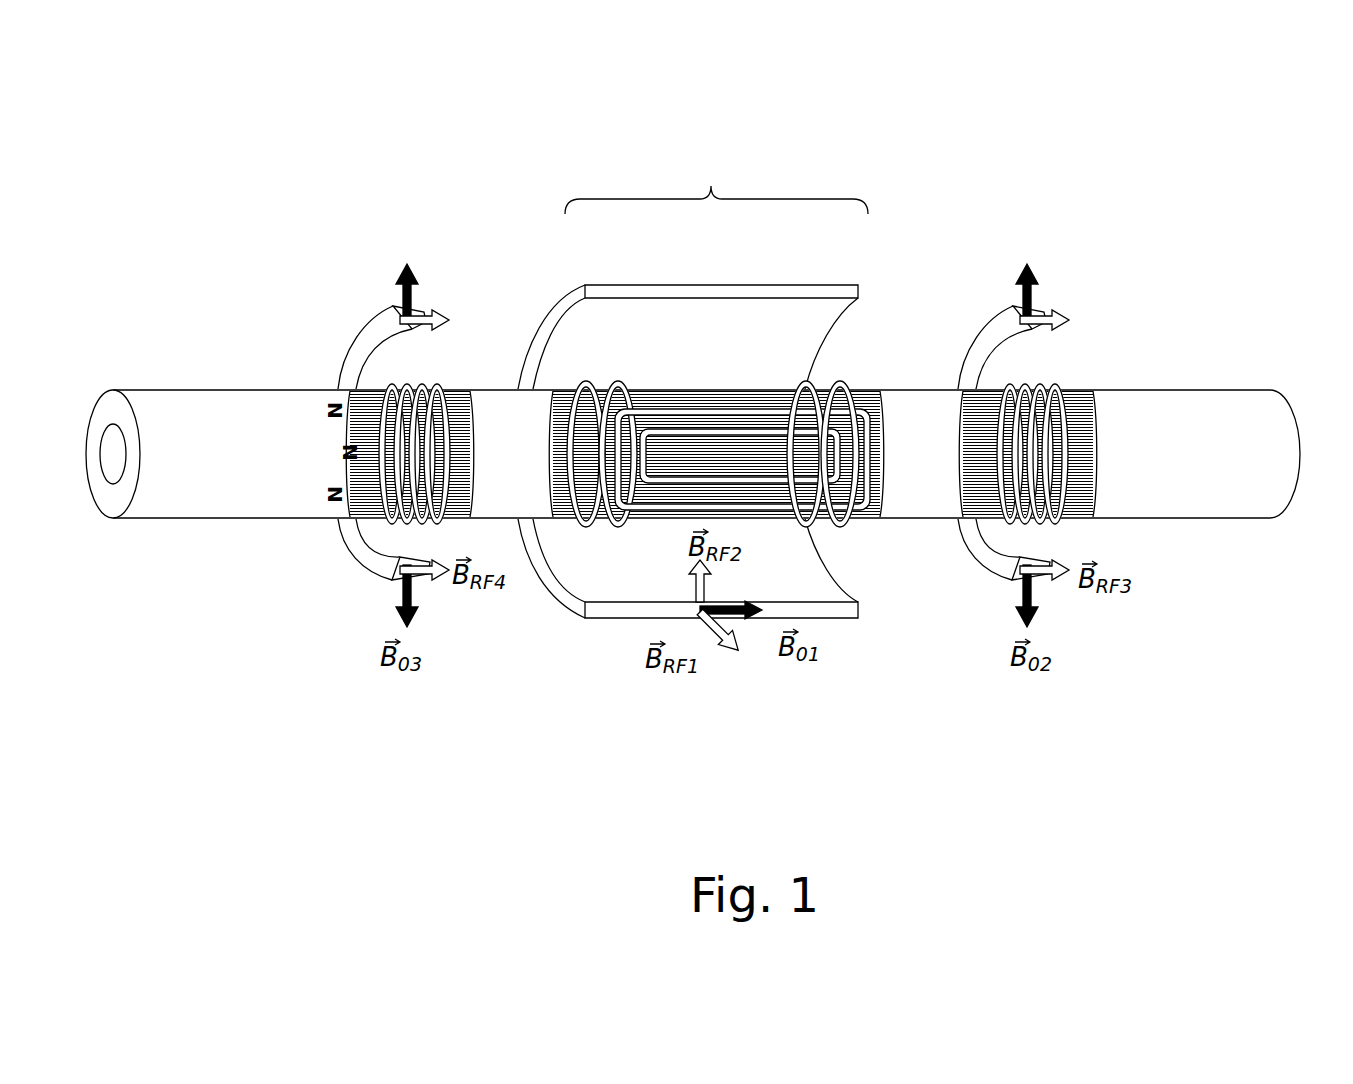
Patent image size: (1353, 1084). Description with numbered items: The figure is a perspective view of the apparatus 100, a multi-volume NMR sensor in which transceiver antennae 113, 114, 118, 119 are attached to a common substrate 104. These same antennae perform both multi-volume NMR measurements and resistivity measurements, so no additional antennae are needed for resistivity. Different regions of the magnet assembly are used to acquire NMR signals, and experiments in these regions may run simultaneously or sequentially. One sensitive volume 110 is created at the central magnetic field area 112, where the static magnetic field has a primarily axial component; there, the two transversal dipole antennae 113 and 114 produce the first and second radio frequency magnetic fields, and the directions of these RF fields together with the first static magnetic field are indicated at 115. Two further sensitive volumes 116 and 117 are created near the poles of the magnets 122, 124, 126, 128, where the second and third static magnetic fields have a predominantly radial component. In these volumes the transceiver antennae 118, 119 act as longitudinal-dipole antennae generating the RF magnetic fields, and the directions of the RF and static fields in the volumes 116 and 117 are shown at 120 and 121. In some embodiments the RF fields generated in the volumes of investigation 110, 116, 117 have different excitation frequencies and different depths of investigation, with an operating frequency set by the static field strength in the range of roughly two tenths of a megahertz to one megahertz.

The apparatus 100 is at (1230, 138).
The common substrate 104 is at (1228, 376).
The sensitive volume 110 is at (806, 292).
The central magnetic field area 112 is at (716, 186).
The transversal dipole antenna 113 is at (760, 404).
The transversal dipole antenna 114 is at (850, 518).
The field directions indication 115 is at (736, 624).
The sensitive volume 116 is at (368, 328).
The sensitive volume 117 is at (1044, 306).
The transceiver antenna 118 is at (372, 388).
The transceiver antenna 119 is at (1040, 388).
The field directions indication 120 is at (396, 592).
The field directions indication 121 is at (1040, 600).
The magnet 122 is at (190, 389).
The magnet 124 is at (496, 389).
The magnet 126 is at (934, 389).
The magnet 128 is at (1168, 389).